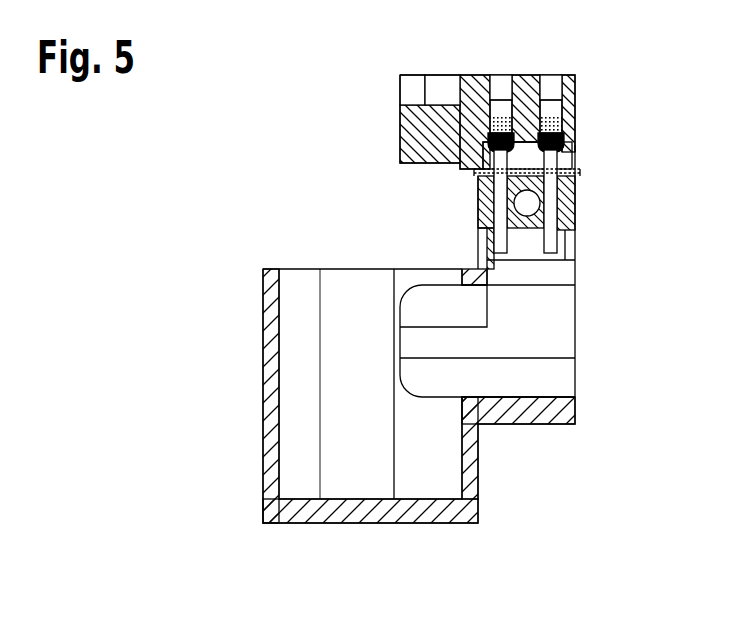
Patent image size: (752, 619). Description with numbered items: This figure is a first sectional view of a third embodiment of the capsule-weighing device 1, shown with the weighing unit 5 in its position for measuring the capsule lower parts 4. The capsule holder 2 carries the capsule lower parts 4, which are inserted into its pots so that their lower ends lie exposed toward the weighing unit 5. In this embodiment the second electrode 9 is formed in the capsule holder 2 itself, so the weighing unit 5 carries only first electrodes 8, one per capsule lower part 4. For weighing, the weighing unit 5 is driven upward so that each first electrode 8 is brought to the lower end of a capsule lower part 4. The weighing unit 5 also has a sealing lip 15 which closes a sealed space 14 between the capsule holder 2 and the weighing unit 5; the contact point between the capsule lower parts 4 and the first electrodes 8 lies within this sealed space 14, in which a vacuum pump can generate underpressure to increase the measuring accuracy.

The capsule-weighing device 1 is at (220, 228).
The capsule holder 2 is at (536, 105).
The second electrode 9 is at (565, 90).
The capsule lower part 4 is at (501, 110).
The weighing unit 5 is at (467, 475).
The first electrode 8 is at (502, 212).
The sealed space 14 is at (572, 140).
The sealing lip 15 is at (578, 173).